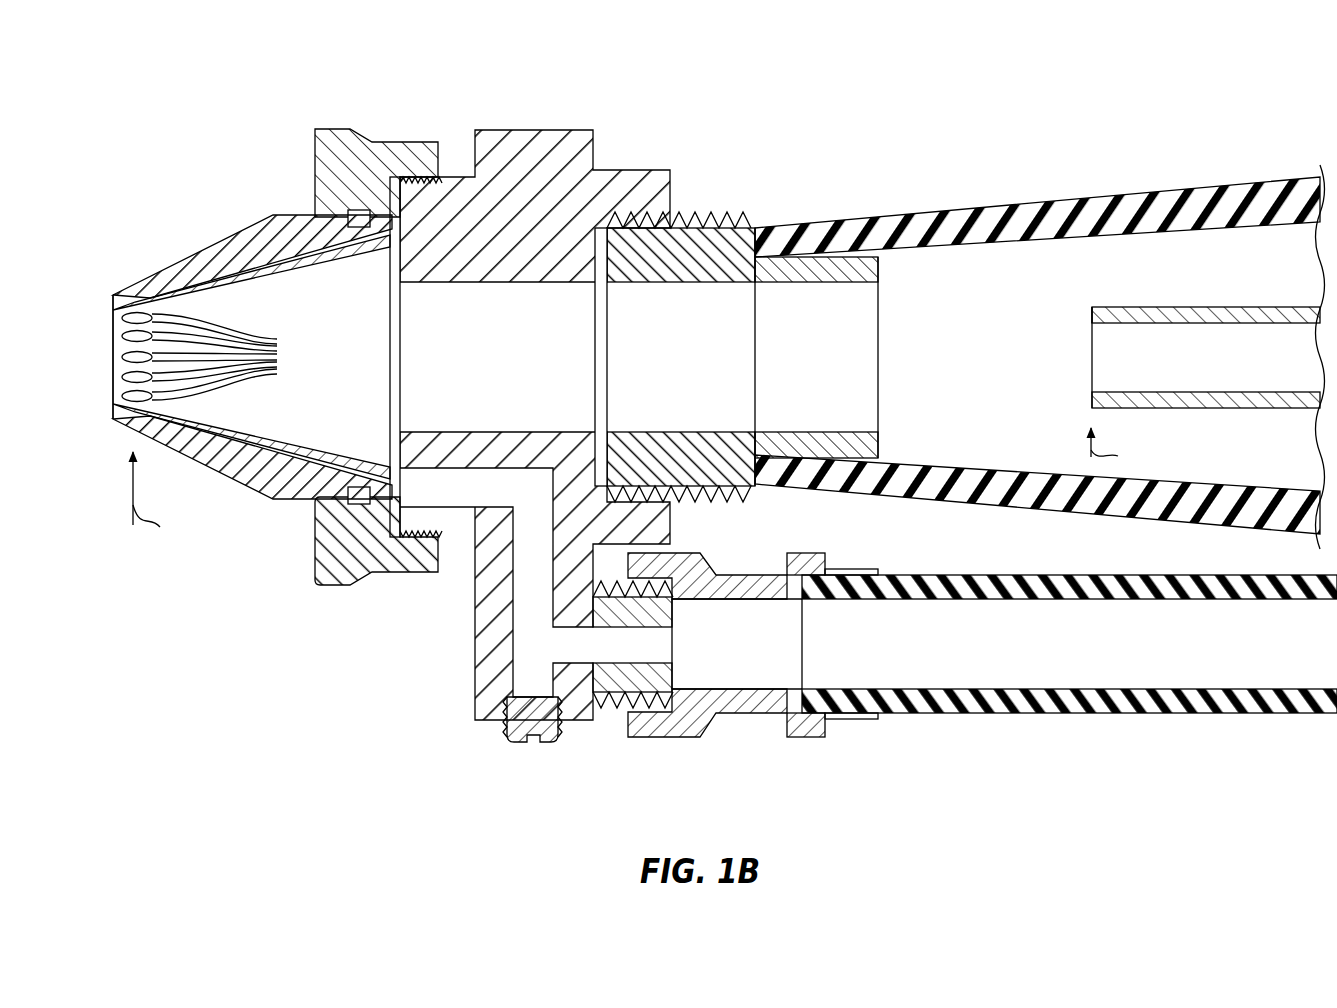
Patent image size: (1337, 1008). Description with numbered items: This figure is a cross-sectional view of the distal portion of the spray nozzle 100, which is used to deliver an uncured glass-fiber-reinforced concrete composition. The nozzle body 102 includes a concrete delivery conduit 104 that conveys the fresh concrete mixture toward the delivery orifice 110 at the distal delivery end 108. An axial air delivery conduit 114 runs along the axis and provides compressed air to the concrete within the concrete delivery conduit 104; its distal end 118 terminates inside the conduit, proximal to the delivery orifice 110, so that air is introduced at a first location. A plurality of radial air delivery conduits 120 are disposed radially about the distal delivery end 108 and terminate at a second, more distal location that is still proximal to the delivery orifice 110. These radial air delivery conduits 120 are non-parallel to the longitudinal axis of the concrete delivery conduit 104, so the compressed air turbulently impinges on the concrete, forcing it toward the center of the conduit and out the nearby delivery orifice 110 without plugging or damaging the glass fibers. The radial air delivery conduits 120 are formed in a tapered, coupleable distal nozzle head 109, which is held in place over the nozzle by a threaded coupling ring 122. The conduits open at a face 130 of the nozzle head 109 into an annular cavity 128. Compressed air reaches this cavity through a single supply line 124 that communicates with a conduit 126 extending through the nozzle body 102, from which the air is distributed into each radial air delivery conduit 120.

The spray nozzle 100 is at (892, 128).
The nozzle body 102 is at (587, 158).
The concrete delivery conduit 104 is at (1093, 268).
The distal delivery end 108 is at (198, 234).
The distal nozzle head 109 is at (233, 257).
The delivery orifice 110 is at (101, 332).
The axial air delivery conduit 114 is at (1233, 343).
The distal end 118 is at (1106, 302).
The radial air delivery conduits 120 is at (286, 427).
The threaded coupling ring 122 is at (322, 128).
The supply line 124 is at (970, 707).
The conduit 126 is at (707, 660).
The annular cavity 128 is at (400, 227).
The face 130 is at (400, 200).